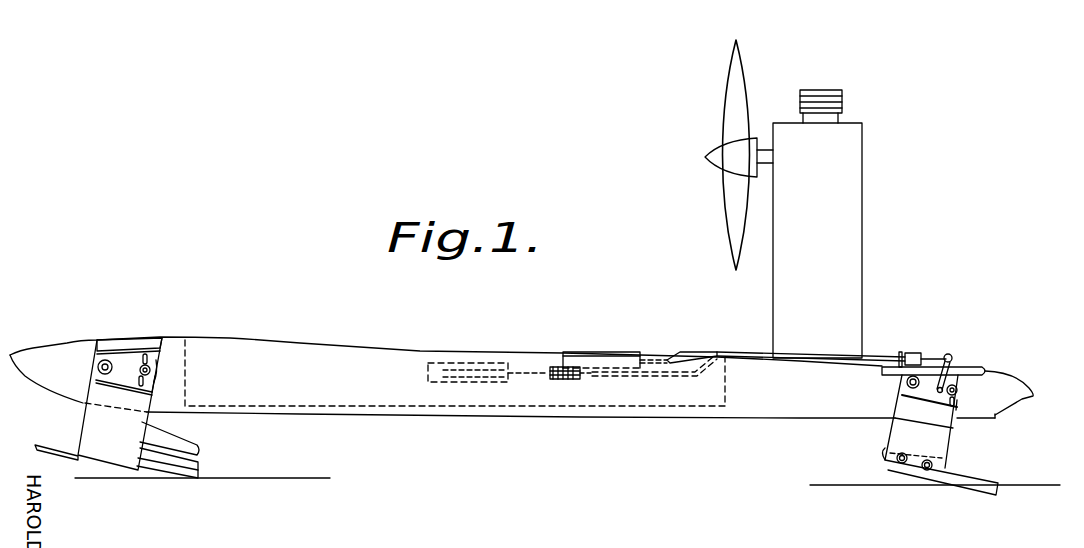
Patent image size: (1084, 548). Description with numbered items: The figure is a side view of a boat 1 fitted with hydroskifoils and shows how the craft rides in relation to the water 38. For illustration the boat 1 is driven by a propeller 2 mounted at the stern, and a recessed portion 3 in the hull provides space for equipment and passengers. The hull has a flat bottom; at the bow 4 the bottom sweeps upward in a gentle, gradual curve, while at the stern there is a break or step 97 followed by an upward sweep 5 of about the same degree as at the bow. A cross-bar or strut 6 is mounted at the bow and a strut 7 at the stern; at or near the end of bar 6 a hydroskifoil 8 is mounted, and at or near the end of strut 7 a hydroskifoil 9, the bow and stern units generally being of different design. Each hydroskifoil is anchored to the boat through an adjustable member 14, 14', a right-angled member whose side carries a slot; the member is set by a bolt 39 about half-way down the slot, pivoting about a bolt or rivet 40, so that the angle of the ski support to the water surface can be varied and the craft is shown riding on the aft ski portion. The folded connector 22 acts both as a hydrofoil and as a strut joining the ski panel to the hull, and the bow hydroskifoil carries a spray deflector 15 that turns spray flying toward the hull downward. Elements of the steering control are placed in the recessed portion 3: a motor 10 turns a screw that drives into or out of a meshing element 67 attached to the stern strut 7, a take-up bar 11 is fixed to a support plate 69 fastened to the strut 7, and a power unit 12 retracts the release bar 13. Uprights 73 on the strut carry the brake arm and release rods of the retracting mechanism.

The boat 1 is at (56, 339).
The propeller 2 is at (730, 125).
The recessed portion 3 is at (303, 359).
The bow 4 is at (42, 388).
The upward sweep 5 is at (1022, 398).
The cross-bar 6 is at (150, 338).
The strut 7 is at (966, 368).
The hydroskifoil 8 is at (54, 446).
The hydroskifoil 9 is at (936, 457).
The motor 10 is at (457, 366).
The take-up bar 11 is at (666, 380).
The power unit 12 is at (605, 351).
The release bar 13 is at (690, 351).
The adjustable member 14 is at (101, 377).
The adjustable member 14' is at (911, 392).
The spray deflector 15 is at (197, 447).
The connector 22 is at (117, 453).
The water 38 is at (246, 480).
The bolt 39 is at (150, 368).
The bolt or rivet 40 is at (107, 359).
The meshing element 67 is at (563, 383).
The support plate 69 is at (953, 356).
The uprights 73 is at (910, 353).
The steps 97 is at (998, 416).